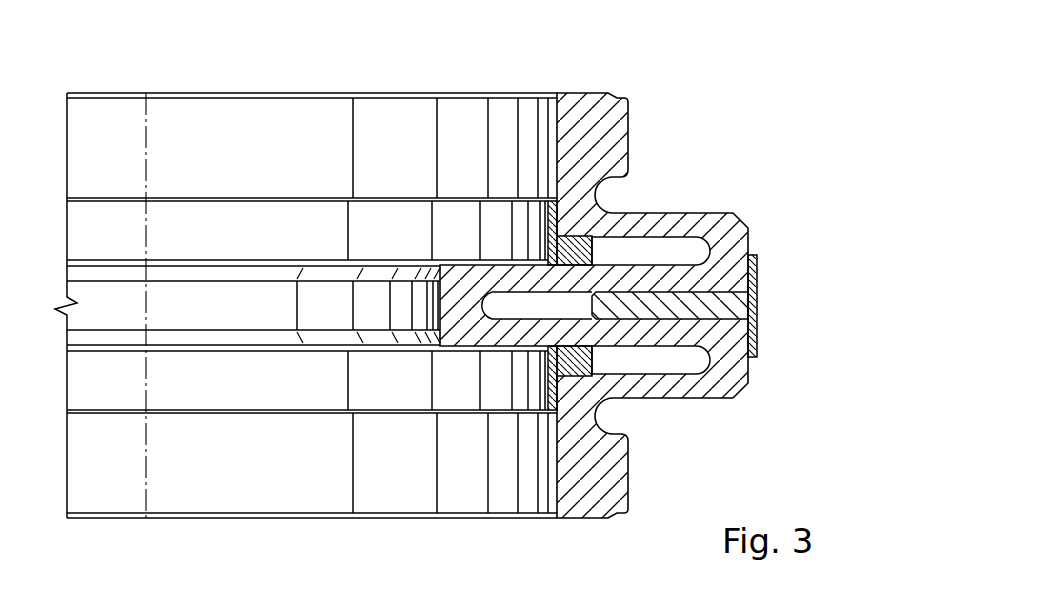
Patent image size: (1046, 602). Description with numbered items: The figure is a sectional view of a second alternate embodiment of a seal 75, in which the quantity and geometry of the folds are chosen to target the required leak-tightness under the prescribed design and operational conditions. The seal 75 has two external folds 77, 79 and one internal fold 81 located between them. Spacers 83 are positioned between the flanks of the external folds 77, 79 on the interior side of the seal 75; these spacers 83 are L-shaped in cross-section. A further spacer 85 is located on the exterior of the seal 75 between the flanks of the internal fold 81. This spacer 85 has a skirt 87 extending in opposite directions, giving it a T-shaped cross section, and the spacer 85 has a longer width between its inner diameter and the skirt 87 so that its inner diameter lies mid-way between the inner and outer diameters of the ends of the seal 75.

The seal 75 is at (620, 80).
The external fold 77 is at (697, 213).
The external fold 79 is at (672, 400).
The internal fold 81 is at (473, 265).
The spacers 83 is at (593, 360).
The spacer 85 is at (628, 297).
The skirt 87 is at (758, 282).